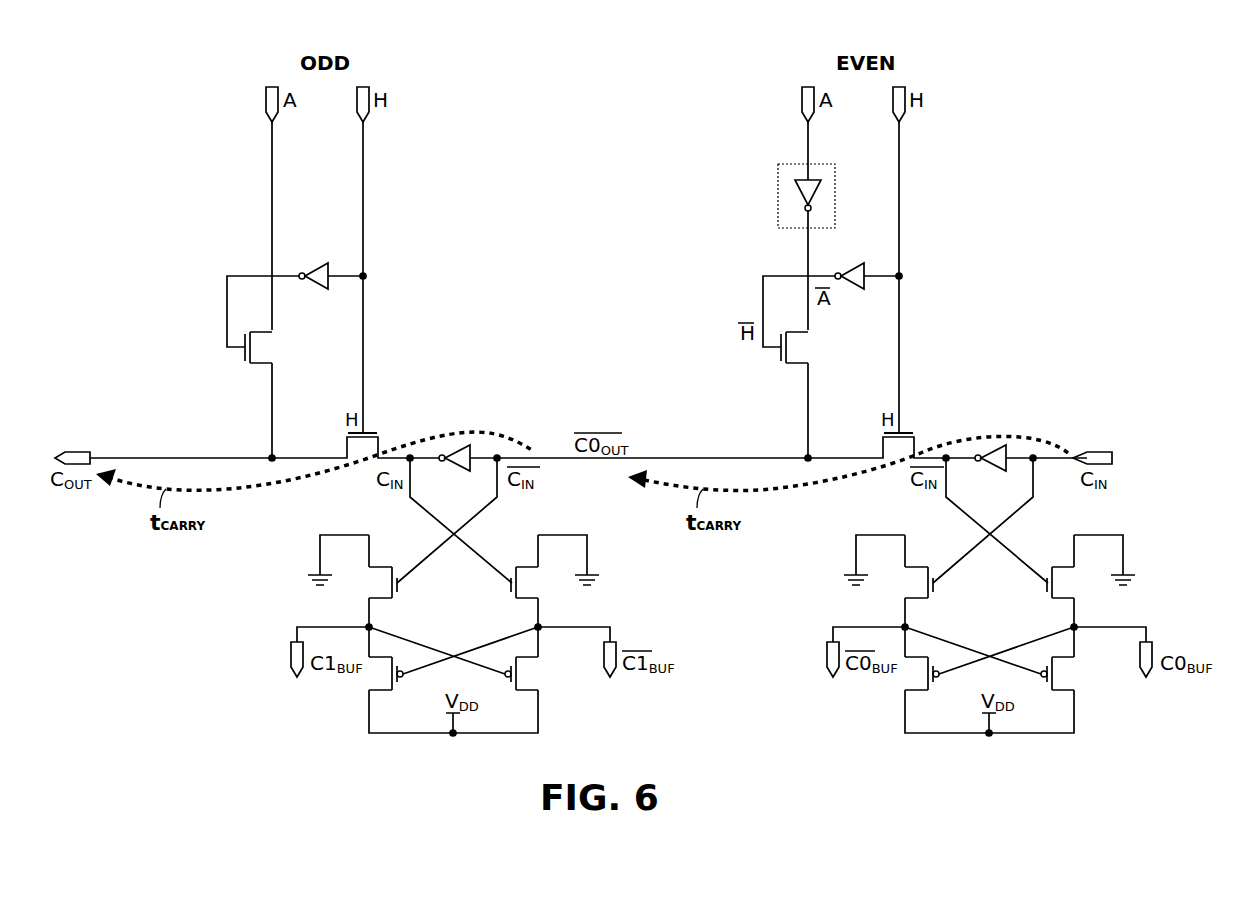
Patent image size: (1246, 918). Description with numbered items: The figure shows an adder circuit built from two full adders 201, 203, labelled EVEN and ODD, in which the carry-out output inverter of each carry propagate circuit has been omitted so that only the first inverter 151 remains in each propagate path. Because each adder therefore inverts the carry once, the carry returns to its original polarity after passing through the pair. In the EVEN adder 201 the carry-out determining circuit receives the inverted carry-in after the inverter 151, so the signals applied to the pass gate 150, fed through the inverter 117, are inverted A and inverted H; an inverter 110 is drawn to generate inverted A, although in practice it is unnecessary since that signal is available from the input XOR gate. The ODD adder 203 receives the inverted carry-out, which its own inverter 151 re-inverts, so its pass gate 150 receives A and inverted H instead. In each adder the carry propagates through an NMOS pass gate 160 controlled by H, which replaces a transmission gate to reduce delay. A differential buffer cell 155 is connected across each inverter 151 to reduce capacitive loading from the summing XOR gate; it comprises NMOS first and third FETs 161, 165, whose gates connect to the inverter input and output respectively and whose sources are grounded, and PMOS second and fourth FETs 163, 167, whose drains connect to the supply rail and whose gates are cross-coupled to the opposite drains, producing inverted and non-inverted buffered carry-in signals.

The first full adder 201 is at (928, 66).
The second full adder 203 is at (408, 66).
The inverter 110 is at (778, 176).
The inverter 117 is at (313, 272).
The pass gate 150 is at (244, 354).
The first inverter 151 is at (458, 450).
The differential buffer cell 155 is at (753, 635).
The pass gate 160 is at (370, 432).
The first FET 161 is at (400, 592).
The second FET 163 is at (400, 690).
The third FET 165 is at (512, 592).
The fourth FET 167 is at (512, 690).